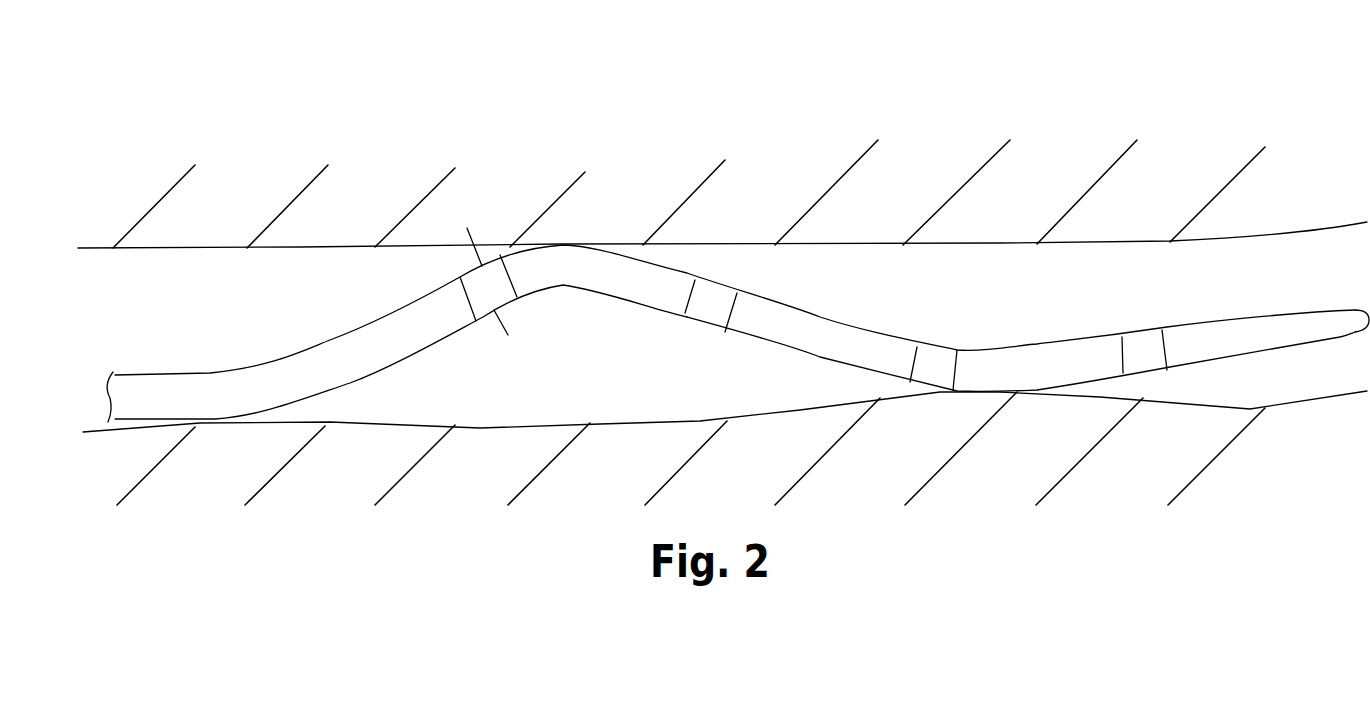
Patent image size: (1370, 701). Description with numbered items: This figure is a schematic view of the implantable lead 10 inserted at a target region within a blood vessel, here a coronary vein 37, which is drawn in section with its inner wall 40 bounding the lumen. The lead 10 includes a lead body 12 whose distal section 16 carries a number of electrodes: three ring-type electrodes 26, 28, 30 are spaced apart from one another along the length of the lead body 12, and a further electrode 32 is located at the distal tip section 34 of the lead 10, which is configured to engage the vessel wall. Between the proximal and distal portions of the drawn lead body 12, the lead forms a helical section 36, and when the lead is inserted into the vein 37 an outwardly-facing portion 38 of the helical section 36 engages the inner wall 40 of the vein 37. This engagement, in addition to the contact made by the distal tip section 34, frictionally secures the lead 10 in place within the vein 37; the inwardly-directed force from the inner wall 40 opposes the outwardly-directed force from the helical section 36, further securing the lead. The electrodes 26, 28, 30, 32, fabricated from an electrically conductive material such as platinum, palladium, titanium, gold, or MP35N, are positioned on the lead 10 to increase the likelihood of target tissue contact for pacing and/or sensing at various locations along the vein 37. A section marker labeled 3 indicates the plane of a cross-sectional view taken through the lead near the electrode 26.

The implantable lead 10 is at (738, 307).
The lead body 12 is at (803, 341).
The distal section 16 is at (698, 354).
The electrode 26 is at (483, 300).
The electrode 28 is at (710, 292).
The electrode 30 is at (933, 372).
The electrode 32 is at (1147, 350).
The distal tip section 34 is at (1323, 332).
The helical section 36 is at (604, 343).
The coronary vein 37 is at (722, 298).
The outwardly-facing portion 38 is at (535, 248).
The inner wall 40 is at (1018, 250).
The section line 3- 3 is at (501, 337).